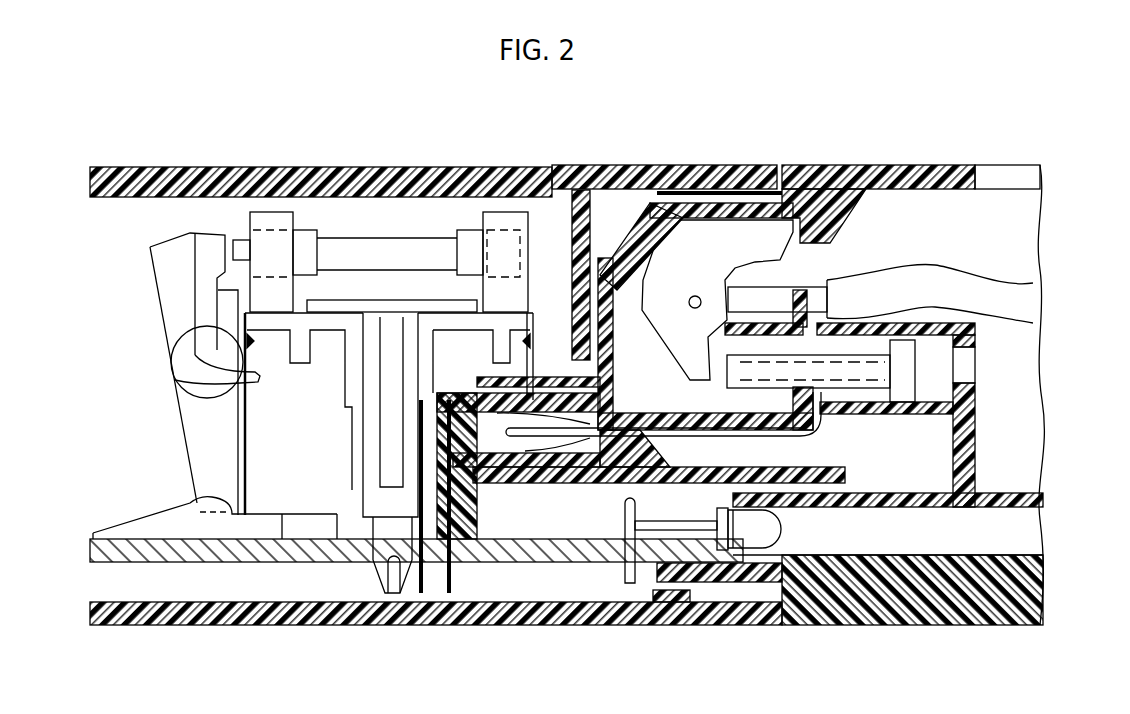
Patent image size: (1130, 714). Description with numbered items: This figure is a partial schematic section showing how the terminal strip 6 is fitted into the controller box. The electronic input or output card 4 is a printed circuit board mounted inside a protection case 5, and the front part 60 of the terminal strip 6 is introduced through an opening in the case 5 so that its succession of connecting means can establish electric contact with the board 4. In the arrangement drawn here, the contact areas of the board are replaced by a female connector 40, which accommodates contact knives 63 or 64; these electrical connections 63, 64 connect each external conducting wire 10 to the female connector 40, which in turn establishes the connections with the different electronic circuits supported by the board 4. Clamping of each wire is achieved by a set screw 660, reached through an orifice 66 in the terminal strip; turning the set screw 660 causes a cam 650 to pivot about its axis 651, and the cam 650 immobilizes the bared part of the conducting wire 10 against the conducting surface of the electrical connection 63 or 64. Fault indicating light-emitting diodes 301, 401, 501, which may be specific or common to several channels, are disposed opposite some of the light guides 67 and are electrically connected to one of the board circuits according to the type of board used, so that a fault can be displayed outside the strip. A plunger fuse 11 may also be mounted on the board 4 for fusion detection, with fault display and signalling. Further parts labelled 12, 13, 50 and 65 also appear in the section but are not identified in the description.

The electronic input or output card 4 is at (276, 550).
The protection case 5 is at (95, 167).
The terminal strip 6 is at (870, 622).
The conducting wires 10 is at (1012, 292).
The plunger fuse 11 is at (392, 247).
The support bracket 12 is at (356, 444).
The lever 13 is at (260, 515).
The female connector 40 is at (532, 480).
The cover plate 50 is at (331, 167).
The front part of the terminal strip 60 is at (610, 384).
The contact knife 63 is at (659, 429).
The contact knife 64 is at (725, 436).
The cam lever 65 is at (838, 255).
The orifice 66 is at (988, 373).
The light guide 67 is at (1030, 532).
The fault indicating light-emitting diode 301 is at (823, 529).
The fault indicating light-emitting diode 401 is at (823, 529).
The fault indicating light-emitting diode 501 is at (770, 528).
The cam 650 is at (732, 237).
The cam axis 651 is at (690, 296).
The set screw 660 is at (902, 355).